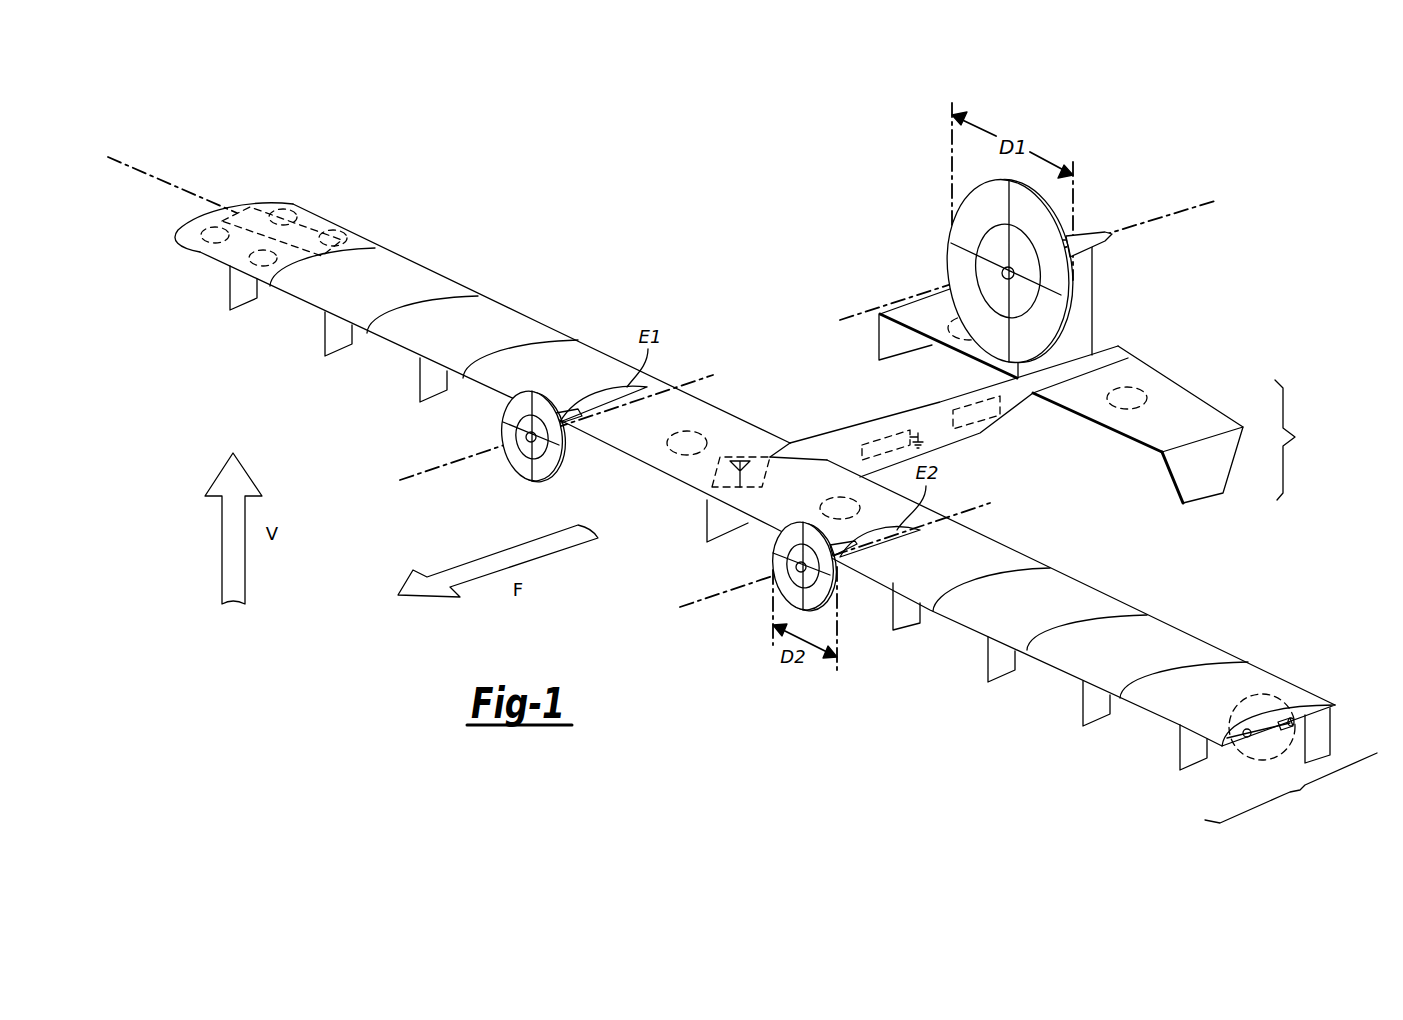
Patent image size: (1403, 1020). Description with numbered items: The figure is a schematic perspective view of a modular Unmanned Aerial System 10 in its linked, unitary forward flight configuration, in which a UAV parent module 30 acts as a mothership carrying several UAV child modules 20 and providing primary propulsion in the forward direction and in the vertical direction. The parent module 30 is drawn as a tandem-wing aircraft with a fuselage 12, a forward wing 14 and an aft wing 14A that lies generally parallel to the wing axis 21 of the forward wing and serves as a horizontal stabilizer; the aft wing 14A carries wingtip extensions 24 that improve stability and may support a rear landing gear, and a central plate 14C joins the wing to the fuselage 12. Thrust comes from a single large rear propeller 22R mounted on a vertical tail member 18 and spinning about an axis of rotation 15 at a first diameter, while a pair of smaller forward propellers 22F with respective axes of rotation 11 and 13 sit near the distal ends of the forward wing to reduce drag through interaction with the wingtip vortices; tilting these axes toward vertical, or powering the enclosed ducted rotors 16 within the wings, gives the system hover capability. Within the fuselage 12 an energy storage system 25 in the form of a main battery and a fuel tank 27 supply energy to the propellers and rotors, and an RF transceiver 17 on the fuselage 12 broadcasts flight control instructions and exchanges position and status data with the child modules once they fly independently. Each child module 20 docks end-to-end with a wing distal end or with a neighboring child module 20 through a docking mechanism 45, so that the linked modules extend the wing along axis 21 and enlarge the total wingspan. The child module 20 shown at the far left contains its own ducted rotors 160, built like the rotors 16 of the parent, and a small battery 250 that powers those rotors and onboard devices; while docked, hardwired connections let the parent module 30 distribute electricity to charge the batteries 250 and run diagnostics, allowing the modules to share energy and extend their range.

The Unmanned Aerial System 10 is at (1274, 239).
The axis of rotation 11 is at (417, 470).
The fuselage 12 is at (880, 415).
The axis of rotation 13 is at (690, 603).
The wing 14 is at (776, 513).
The aft wing 14A is at (1175, 400).
The center plate 14C is at (718, 423).
The axis of rotation 15 is at (1168, 215).
The ducted fans or rotors 16 is at (660, 437).
The RF transceiver 17 is at (707, 475).
The vertical tail member 18 is at (1093, 300).
The child module 20 is at (393, 267).
The wing axis 21 is at (148, 168).
The forward propellers 22F is at (522, 460).
The rear propeller 22R is at (960, 263).
The wingtip extensions 24 is at (1200, 475).
The energy storage system 25 is at (857, 445).
The fuel tank 27 is at (975, 416).
The UAV parent module 30 is at (816, 276).
The docking mechanism 45 is at (1286, 687).
The ducted fans or rotors 160 is at (295, 207).
The battery 250 is at (261, 210).